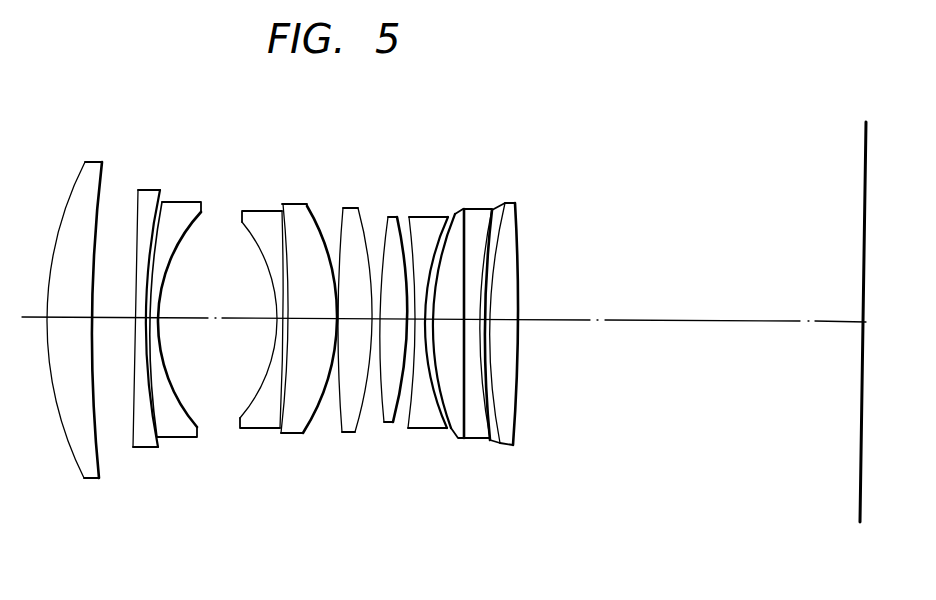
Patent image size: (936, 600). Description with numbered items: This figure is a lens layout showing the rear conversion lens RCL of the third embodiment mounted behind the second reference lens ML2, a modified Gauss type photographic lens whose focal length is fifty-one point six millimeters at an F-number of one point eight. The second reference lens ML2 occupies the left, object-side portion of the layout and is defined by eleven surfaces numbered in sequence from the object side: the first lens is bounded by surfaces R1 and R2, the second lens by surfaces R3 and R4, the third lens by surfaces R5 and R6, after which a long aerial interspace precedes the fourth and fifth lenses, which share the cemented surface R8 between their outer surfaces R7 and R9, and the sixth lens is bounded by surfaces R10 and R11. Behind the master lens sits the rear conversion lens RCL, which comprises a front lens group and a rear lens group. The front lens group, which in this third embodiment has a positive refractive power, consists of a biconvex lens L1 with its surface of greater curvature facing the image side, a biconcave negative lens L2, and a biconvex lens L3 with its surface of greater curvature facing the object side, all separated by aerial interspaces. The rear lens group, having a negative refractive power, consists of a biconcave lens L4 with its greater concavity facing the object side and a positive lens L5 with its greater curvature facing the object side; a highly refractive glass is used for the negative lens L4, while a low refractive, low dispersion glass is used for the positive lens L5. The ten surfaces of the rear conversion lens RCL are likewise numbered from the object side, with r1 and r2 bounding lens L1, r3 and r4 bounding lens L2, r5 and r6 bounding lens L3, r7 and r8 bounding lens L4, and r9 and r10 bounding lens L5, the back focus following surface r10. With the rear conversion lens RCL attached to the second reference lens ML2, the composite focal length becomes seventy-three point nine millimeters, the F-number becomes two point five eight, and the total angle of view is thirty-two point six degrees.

The second reference lens ML2 is at (378, 535).
The rear conversion lens RCL is at (535, 139).
The first lens surface of the second reference lens R1 is at (82, 462).
The second lens surface of the second reference lens R2 is at (98, 462).
The third lens surface of the second reference lens R3 is at (133, 437).
The fourth lens surface of the second reference lens R4 is at (154, 418).
The fifth lens surface of the second reference lens R5 is at (157, 420).
The sixth lens surface of the second reference lens R6 is at (189, 406).
The seventh lens surface of the second reference lens R7 is at (246, 402).
The eighth lens surface of the second reference lens R8 is at (282, 404).
The ninth lens surface of the second reference lens R9 is at (307, 425).
The tenth lens surface of the second reference lens R10 is at (320, 416).
The eleventh lens surface of the second reference lens R11 is at (348, 425).
The biconvex lens L1 is at (388, 330).
The biconcave negative lens L2 is at (426, 341).
The biconvex lens L3 is at (465, 335).
The biconcave lens L4 is at (501, 345).
The positive lens L5 is at (539, 331).
The first lens surface of the RCL r1 is at (383, 420).
The second lens surface of the RCL r2 is at (401, 422).
The third lens surface of the RCL r3 is at (405, 428).
The fourth lens surface of the RCL r4 is at (438, 427).
The fifth lens surface of the RCL r5 is at (452, 424).
The sixth lens surface of the RCL r6 is at (463, 441).
The seventh lens surface of the RCL r7 is at (479, 439).
The eighth lens surface of the RCL r8 is at (487, 441).
The ninth lens surface of the RCL r9 is at (496, 443).
The tenth lens surface of the RCL r10 is at (516, 424).